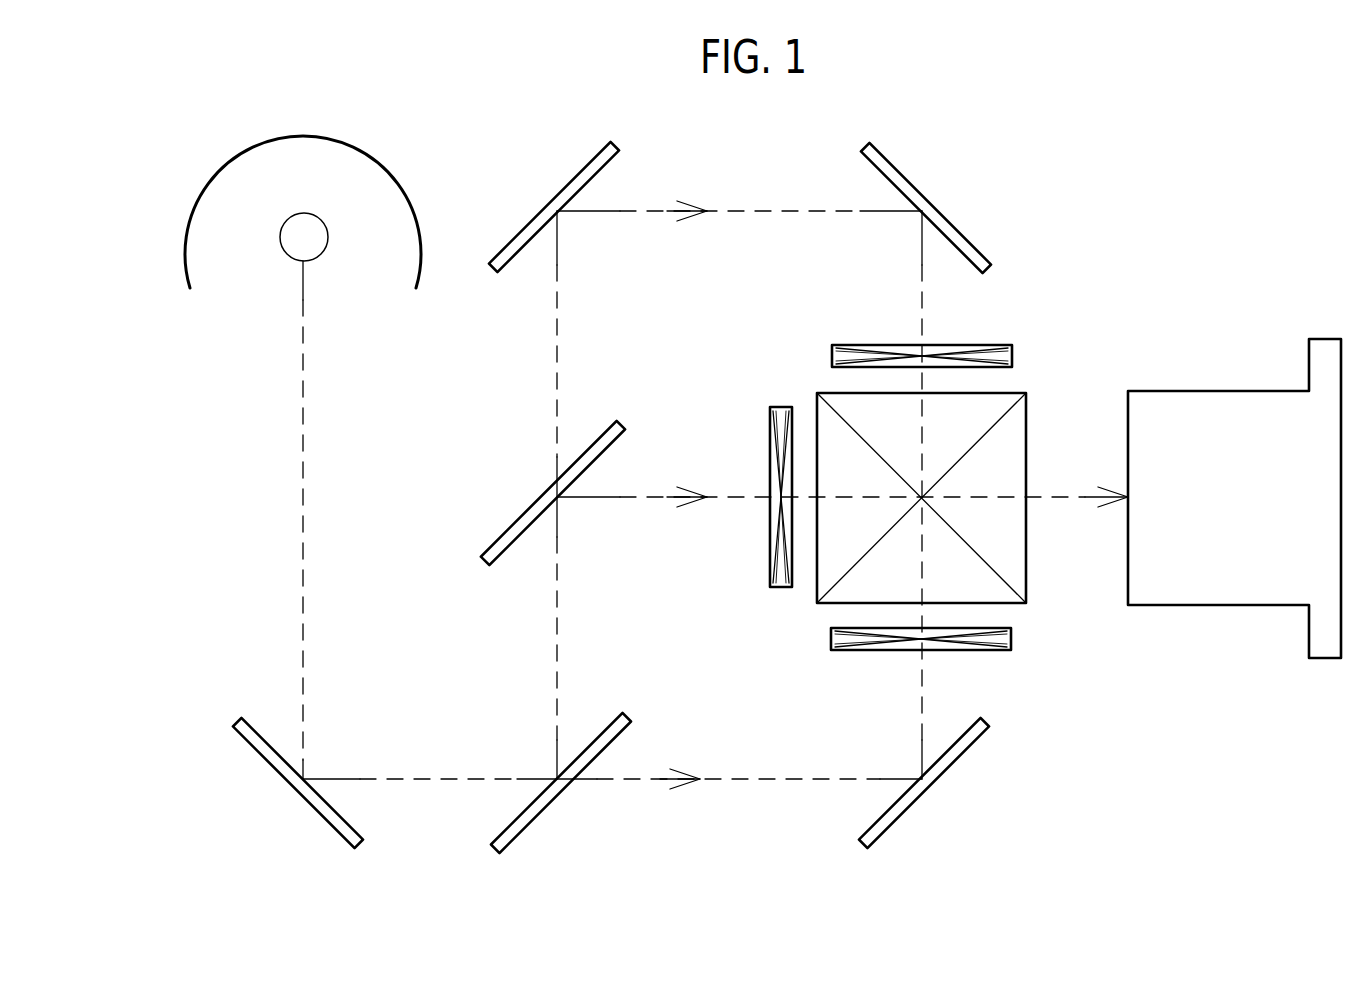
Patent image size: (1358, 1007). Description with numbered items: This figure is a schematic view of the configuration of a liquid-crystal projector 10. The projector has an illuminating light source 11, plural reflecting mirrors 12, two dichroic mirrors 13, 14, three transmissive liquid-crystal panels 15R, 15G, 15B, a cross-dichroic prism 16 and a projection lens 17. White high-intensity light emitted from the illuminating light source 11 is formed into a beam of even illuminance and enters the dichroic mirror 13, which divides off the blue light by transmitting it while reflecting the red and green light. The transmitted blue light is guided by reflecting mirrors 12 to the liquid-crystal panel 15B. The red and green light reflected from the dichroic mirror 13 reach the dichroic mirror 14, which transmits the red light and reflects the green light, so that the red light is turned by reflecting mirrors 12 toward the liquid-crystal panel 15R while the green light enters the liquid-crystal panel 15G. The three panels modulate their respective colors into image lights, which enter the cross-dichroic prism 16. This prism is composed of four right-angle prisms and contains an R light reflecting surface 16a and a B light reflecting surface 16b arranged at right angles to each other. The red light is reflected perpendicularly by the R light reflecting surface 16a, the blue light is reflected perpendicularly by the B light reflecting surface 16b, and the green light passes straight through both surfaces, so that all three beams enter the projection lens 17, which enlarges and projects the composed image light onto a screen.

The liquid-crystal projector 10 is at (1078, 176).
The illuminating light source 11 is at (212, 199).
The reflecting mirror 12 is at (558, 200).
The dichroic mirror 13 is at (535, 817).
The dichroic mirror 14 is at (537, 490).
The liquid-crystal panel 15R is at (852, 345).
The liquid-crystal panel 15G is at (777, 567).
The liquid-crystal panel 15B is at (1003, 645).
The cross-dichroic prism 16 is at (922, 484).
The R light reflecting surface 16a is at (832, 405).
The B light reflecting surface 16b is at (835, 575).
The projection lens 17 is at (1233, 592).